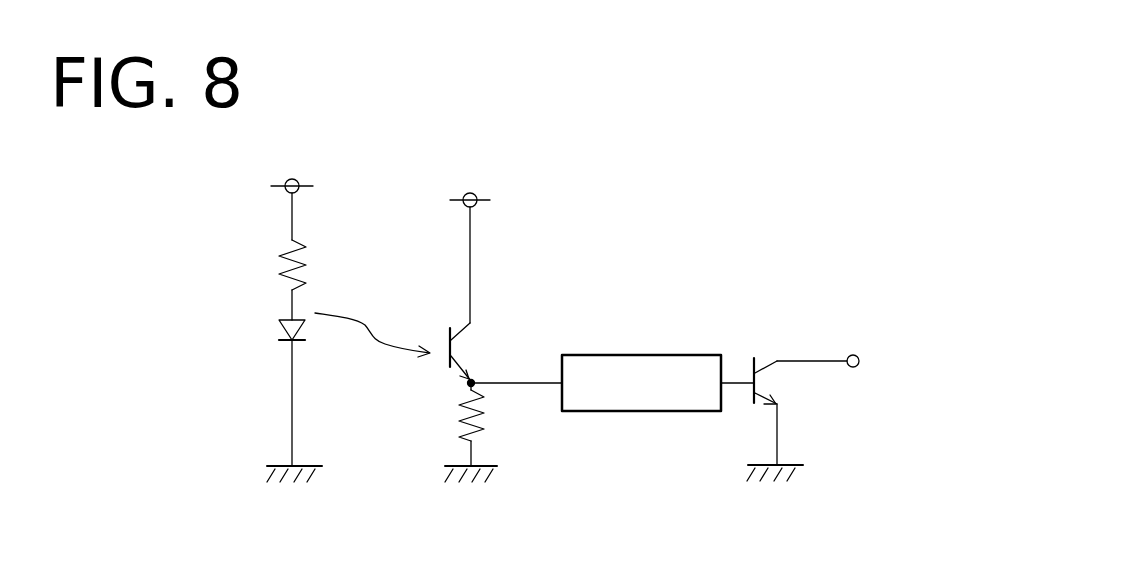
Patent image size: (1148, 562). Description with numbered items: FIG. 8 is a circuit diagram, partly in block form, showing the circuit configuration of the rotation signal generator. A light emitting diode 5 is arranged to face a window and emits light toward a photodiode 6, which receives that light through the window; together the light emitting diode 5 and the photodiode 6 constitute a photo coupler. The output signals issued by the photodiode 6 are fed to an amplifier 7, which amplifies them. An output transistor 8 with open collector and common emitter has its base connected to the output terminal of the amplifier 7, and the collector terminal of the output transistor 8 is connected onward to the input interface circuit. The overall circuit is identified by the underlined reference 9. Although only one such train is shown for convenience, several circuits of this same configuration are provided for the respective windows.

The light emitting diode 5 is at (281, 322).
The photodiode 6 is at (478, 362).
The amplifier 7 is at (615, 354).
The output transistor 8 is at (762, 360).
The photosensor circuit 9 is at (672, 245).